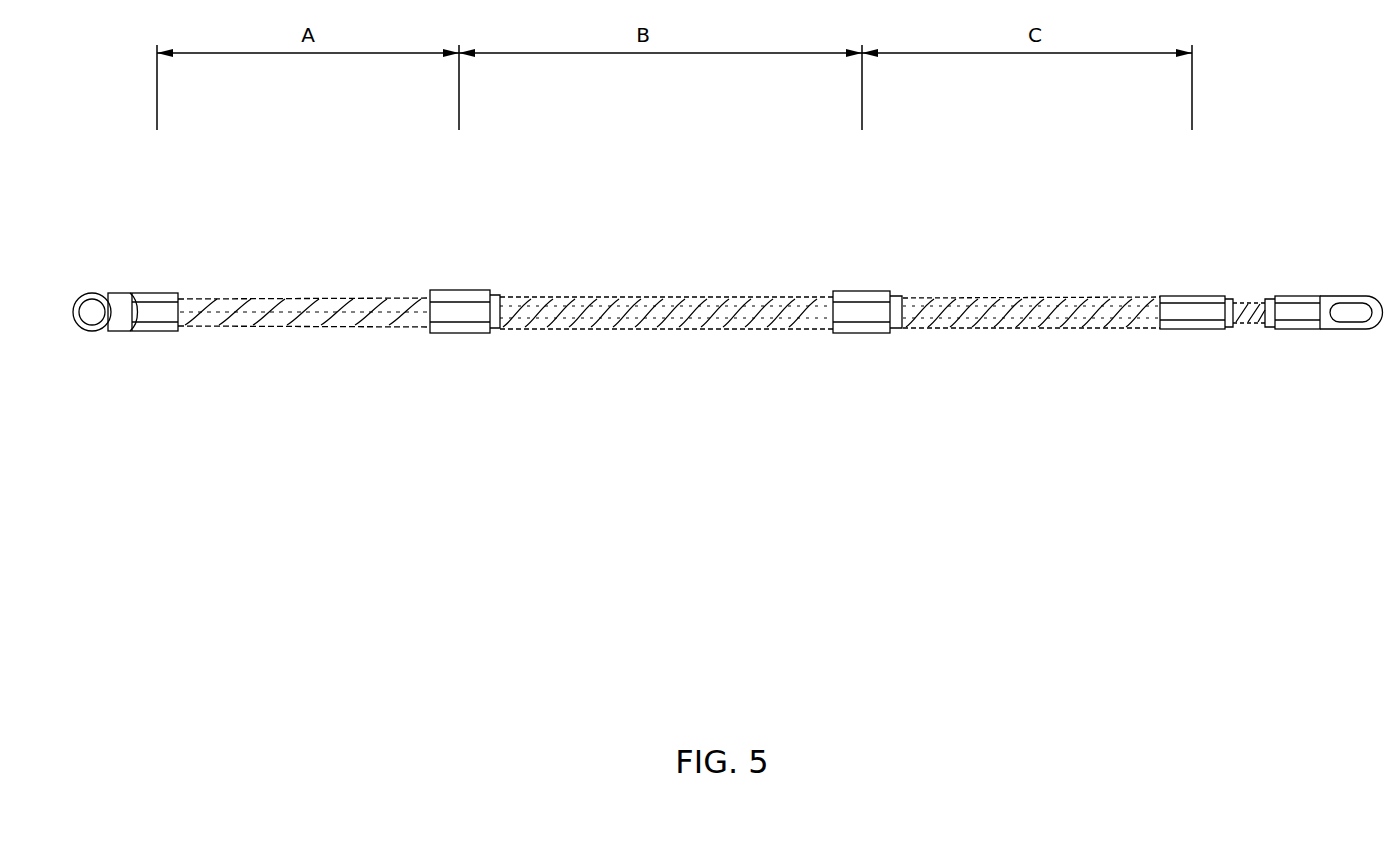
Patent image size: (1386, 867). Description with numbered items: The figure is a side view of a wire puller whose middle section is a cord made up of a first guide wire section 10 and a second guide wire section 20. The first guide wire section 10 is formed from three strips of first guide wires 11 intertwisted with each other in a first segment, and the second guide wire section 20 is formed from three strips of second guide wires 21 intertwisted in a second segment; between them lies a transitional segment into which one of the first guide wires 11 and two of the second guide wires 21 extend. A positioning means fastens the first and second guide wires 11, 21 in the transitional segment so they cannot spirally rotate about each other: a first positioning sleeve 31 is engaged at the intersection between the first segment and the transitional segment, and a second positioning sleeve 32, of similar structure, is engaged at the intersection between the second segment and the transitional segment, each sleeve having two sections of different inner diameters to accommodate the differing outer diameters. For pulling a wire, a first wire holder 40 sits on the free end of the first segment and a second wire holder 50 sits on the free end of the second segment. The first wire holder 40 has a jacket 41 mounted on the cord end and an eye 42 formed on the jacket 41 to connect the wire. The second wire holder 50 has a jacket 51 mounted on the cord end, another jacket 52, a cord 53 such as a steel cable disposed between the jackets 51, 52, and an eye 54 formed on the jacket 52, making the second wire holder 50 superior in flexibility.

The first guide wire section 10 is at (278, 256).
The first guide wires 11 is at (575, 298).
The second guide wire section 20 is at (1040, 252).
The second guide wires 21 is at (615, 297).
The first positioning sleeve 31 is at (465, 298).
The second positioning sleeve 32 is at (865, 298).
The first wire holder 40 is at (125, 335).
The jacket 41 is at (155, 327).
The eye 42 is at (93, 320).
The second wire holder 50 is at (1271, 322).
The jacket 51 is at (1185, 326).
The jacket 52 is at (1300, 326).
The cord 53 is at (1250, 322).
The eye 54 is at (1356, 318).